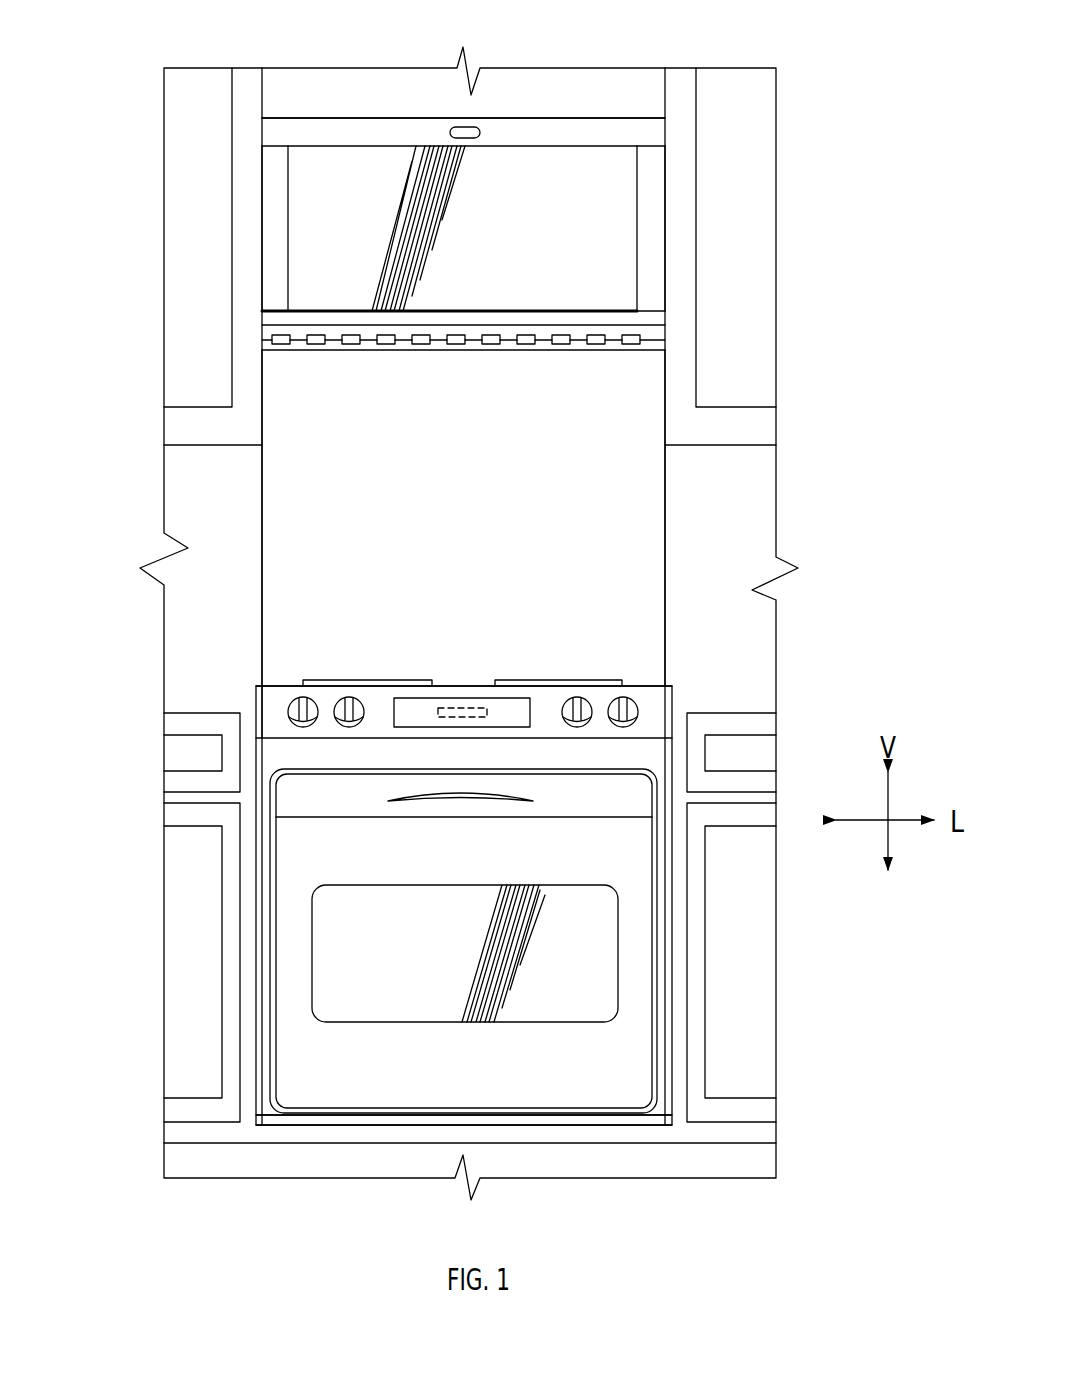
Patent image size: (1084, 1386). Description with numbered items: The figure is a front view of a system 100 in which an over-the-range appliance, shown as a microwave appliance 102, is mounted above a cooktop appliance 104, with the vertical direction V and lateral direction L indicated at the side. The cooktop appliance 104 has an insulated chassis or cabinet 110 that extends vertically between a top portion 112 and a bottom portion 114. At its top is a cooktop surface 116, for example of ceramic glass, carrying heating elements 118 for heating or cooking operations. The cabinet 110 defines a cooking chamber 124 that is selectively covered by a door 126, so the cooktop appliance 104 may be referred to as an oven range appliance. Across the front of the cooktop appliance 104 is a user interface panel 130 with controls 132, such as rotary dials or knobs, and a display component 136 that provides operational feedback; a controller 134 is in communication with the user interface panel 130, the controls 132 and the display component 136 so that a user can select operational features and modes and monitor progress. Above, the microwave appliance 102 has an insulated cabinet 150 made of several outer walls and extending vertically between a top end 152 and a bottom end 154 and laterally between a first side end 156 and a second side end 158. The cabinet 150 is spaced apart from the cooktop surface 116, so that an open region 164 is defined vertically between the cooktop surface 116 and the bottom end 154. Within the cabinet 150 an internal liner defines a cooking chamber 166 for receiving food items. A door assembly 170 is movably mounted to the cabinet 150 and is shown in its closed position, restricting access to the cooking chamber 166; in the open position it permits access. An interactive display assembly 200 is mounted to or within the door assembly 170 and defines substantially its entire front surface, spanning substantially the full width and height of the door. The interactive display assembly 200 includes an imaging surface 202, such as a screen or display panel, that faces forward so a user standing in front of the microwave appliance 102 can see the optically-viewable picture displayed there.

The system 100 is at (100, 130).
The microwave appliance 102 is at (648, 230).
The cooktop appliance 104 is at (247, 932).
The cabinet 110 is at (255, 1117).
The top portion 112 is at (253, 684).
The bottom portion 114 is at (310, 1130).
The cooktop surface 116 is at (286, 684).
The heating elements 118 is at (368, 682).
The cooking chamber 124 is at (446, 995).
The door 126 is at (645, 960).
The user interface panel 130 is at (651, 697).
The controls 132 is at (636, 717).
The controller 134 is at (457, 702).
The display component 136 is at (503, 697).
The cabinet 150 is at (664, 160).
The top end 152 is at (389, 117).
The bottom end 154 is at (649, 353).
The first side end 156 is at (668, 297).
The second side end 158 is at (261, 283).
The open region 164 is at (413, 523).
The cooking chamber 166 is at (330, 188).
The door assembly 170 is at (624, 133).
The interactive display assembly 200 is at (536, 167).
The imaging surface 202 is at (437, 286).